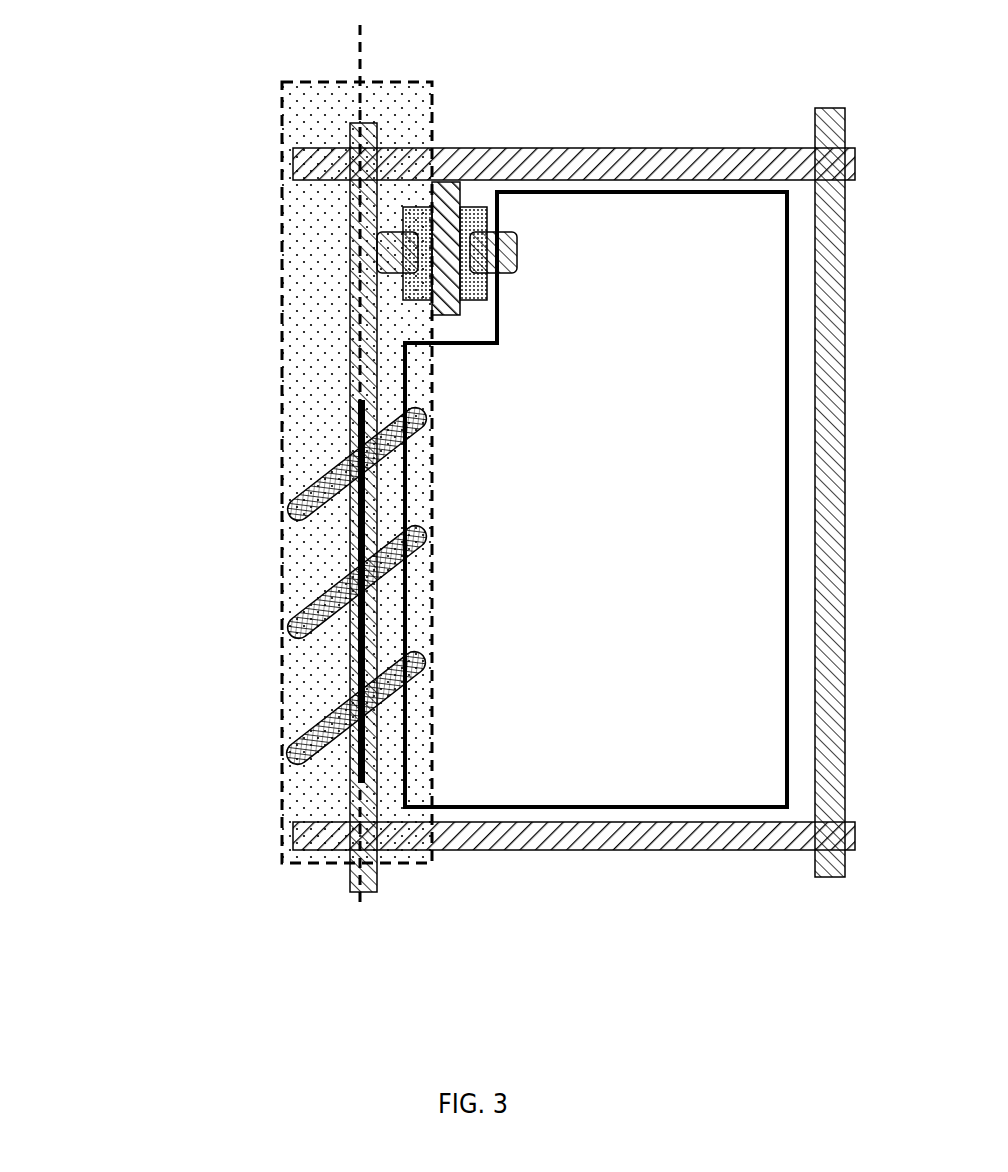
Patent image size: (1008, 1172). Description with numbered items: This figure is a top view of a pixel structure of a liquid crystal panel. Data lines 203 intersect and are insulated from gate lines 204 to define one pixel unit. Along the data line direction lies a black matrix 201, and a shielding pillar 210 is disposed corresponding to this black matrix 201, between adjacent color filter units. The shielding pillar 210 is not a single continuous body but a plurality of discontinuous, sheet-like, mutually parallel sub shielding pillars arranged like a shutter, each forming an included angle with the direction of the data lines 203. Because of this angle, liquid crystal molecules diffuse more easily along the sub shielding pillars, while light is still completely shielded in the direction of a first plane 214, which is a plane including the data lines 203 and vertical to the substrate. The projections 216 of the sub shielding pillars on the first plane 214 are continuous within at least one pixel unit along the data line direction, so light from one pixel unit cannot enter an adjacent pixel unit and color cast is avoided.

The black matrix 201 is at (300, 328).
The data line 203 is at (350, 893).
The gate line 204 is at (702, 852).
The shielding pillar 210 is at (253, 500).
The first plane 214 is at (360, 62).
The projections of the sub shielding pillars 216 is at (377, 527).